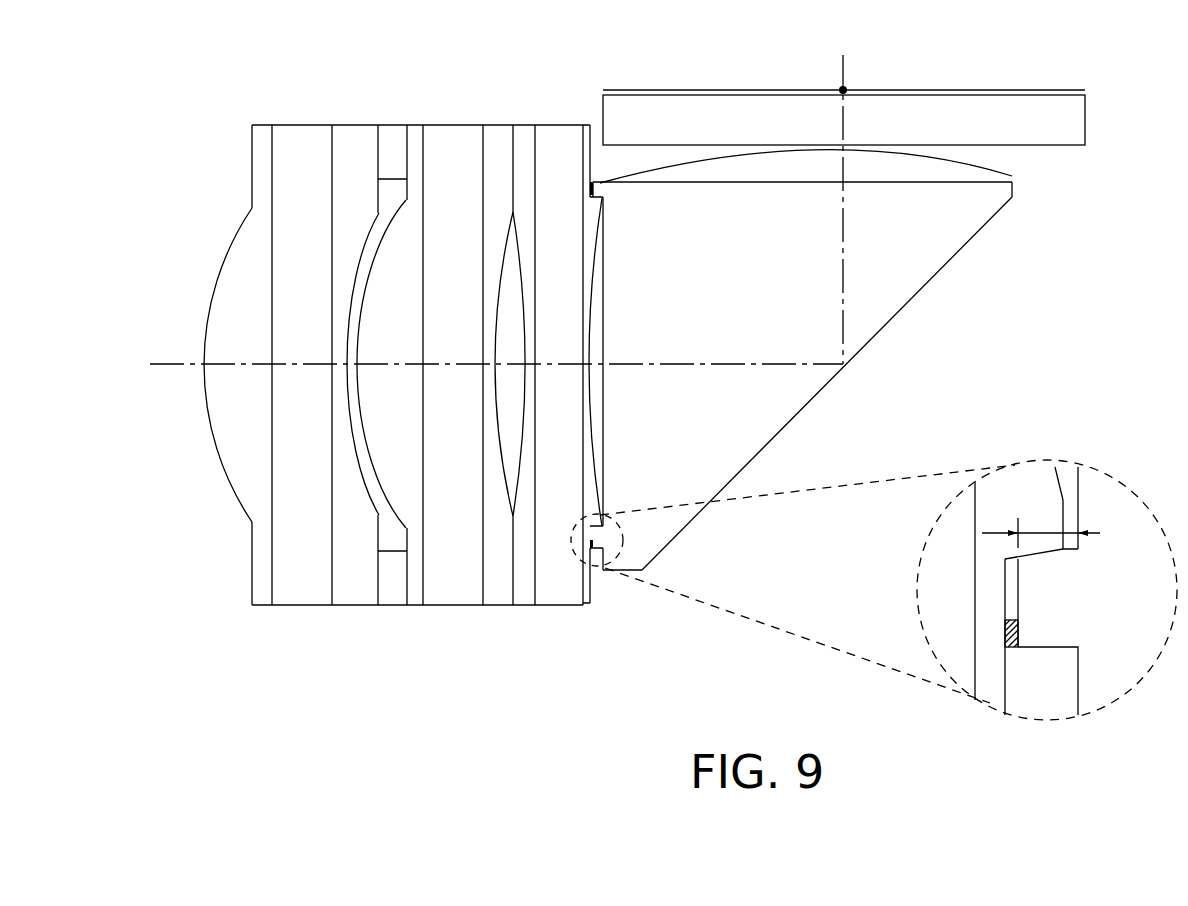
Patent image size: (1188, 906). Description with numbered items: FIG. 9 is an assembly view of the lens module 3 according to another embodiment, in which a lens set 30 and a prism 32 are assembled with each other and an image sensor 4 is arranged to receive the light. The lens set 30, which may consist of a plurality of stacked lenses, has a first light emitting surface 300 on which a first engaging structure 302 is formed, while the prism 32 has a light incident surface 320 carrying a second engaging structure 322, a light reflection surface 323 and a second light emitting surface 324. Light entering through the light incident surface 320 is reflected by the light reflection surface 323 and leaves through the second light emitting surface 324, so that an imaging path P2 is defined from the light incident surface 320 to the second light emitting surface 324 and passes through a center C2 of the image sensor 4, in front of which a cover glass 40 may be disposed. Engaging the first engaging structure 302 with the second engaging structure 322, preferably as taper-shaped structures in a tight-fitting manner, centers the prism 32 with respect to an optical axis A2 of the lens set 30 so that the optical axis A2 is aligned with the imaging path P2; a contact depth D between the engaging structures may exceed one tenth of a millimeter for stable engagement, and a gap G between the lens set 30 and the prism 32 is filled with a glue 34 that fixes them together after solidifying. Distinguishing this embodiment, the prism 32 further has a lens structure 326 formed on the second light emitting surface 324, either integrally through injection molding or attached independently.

The lens module 3 is at (645, 612).
The lens set 30 is at (577, 124).
The first light emitting surface 300 is at (590, 153).
The light incident surface 320 is at (604, 268).
The prism 32 is at (922, 286).
The second engaging structure 322 is at (598, 190).
The light reflection surface 323 is at (800, 412).
The second light emitting surface 324 is at (955, 183).
The lens structure 326 is at (980, 172).
The first engaging structure 302 is at (594, 198).
The glue 34 is at (1018, 637).
The gap G is at (1008, 593).
The contact depth D is at (1041, 527).
The optical axis A2 is at (157, 364).
The center C2 is at (847, 88).
The imaging path P2 is at (842, 235).
The image sensor 4 is at (1052, 89).
The cover glass 40 is at (1085, 115).